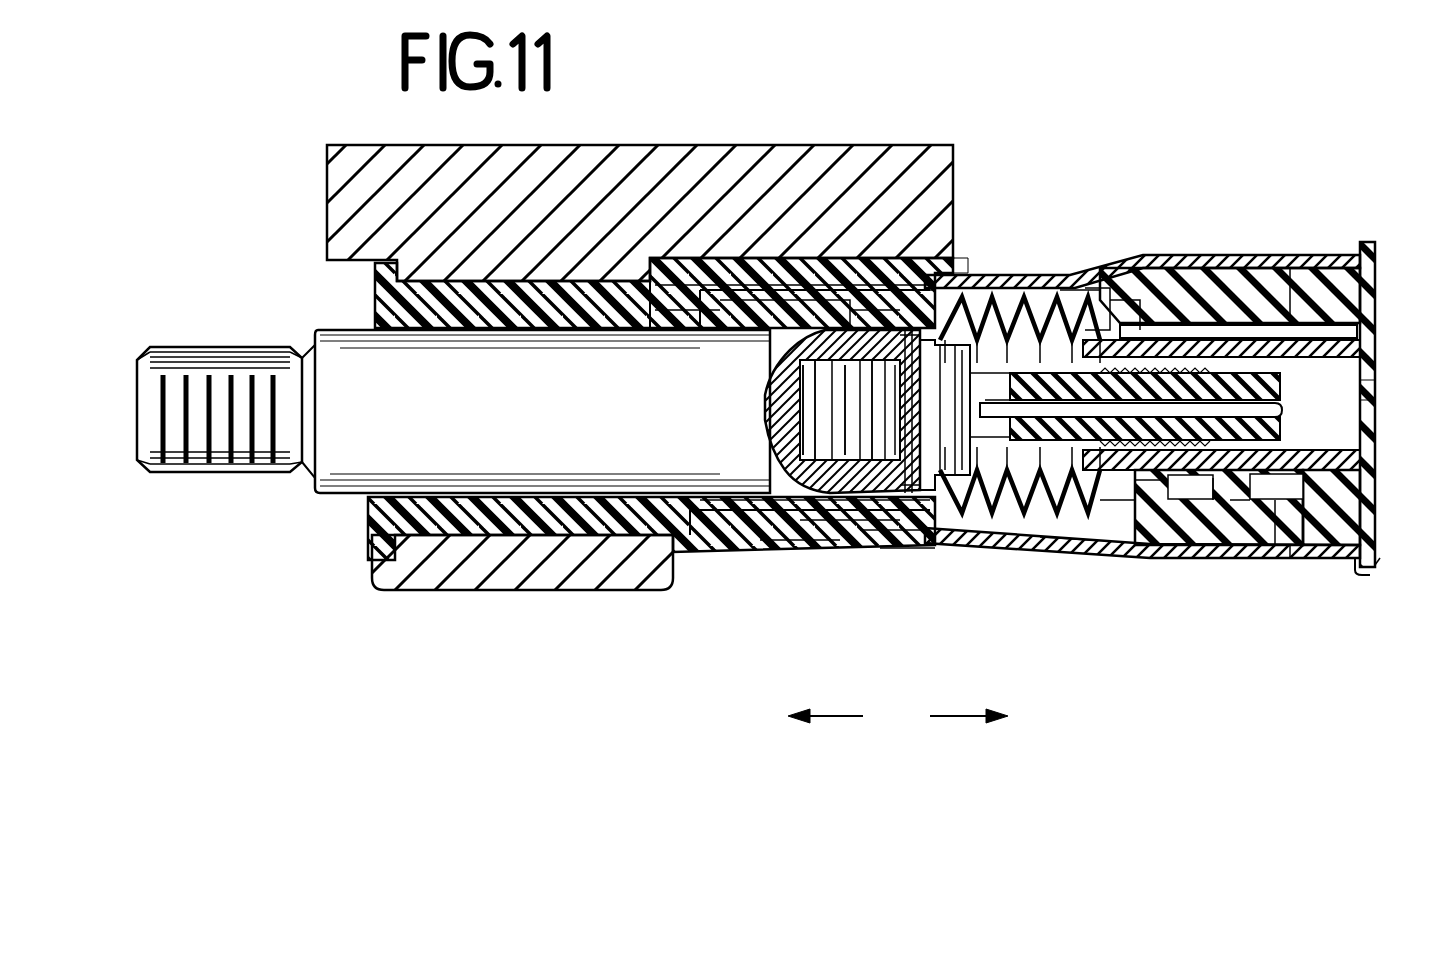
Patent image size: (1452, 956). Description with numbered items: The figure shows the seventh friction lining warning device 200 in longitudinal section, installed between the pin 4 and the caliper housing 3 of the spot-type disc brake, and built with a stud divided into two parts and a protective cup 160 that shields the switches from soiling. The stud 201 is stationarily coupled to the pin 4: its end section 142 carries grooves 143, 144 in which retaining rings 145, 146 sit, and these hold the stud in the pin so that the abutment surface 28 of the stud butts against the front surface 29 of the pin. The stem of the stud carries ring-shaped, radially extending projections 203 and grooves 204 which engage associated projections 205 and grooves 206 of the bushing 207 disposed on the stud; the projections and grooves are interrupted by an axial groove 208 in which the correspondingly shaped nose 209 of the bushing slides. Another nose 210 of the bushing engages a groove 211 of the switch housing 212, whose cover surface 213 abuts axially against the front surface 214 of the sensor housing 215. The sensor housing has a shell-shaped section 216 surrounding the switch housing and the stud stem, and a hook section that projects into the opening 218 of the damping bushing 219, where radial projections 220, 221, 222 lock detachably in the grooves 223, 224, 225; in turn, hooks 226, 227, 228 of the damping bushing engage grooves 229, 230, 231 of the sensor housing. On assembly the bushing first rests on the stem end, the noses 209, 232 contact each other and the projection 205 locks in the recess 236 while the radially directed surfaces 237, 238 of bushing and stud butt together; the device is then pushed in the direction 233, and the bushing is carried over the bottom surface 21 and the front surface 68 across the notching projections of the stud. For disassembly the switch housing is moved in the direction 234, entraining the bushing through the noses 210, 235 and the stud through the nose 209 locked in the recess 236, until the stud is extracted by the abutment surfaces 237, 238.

The caliper housing 3 is at (452, 568).
The pin 4 is at (342, 458).
The bottom surface 21 is at (1362, 390).
The abutment surface 28 is at (952, 240).
The front surface 29 is at (964, 272).
The front surface 68 is at (1358, 330).
The end section 142 is at (780, 440).
The groove 143 is at (800, 390).
The groove 144 is at (805, 410).
The retaining ring 145 is at (850, 460).
The retaining ring 146 is at (872, 470).
The cup 160 is at (1002, 300).
The friction lining warning device 200 is at (1368, 226).
The stud 201 is at (985, 545).
The projections 203 is at (1175, 330).
The grooves 204 is at (1195, 340).
The projections 205 is at (1095, 300).
The grooves 206 is at (1115, 300).
The bushing 207 is at (1362, 493).
The axial groove 208 is at (1120, 550).
The nose 209 is at (1150, 550).
The nose 210 is at (1300, 290).
The groove 211 is at (1255, 300).
The switch housing 212 is at (1375, 280).
The cover surface 213 is at (1355, 568).
The front surface 214 is at (1378, 566).
The sensor housing 215 is at (1305, 560).
The shell-shaped section 216 is at (1045, 555).
The opening 218 is at (630, 300).
The damping bushing 219 is at (552, 538).
The radial projection 220 is at (700, 300).
The radial projection 221 is at (805, 300).
The radial projection 222 is at (902, 295).
The groove 223 is at (672, 290).
The groove 224 is at (760, 290).
The groove 225 is at (852, 290).
The hook 226 is at (800, 525).
The hook 227 is at (820, 530).
The hook 228 is at (930, 540).
The groove 229 is at (815, 548).
The groove 230 is at (890, 540).
The groove 231 is at (905, 545).
The nose 232 is at (1220, 540).
The direction 233 is at (834, 715).
The direction 234 is at (958, 715).
The nose 235 is at (1060, 282).
The recess 236 is at (1240, 540).
The abutment surface 237 is at (1185, 540).
The abutment surface 238 is at (1275, 545).